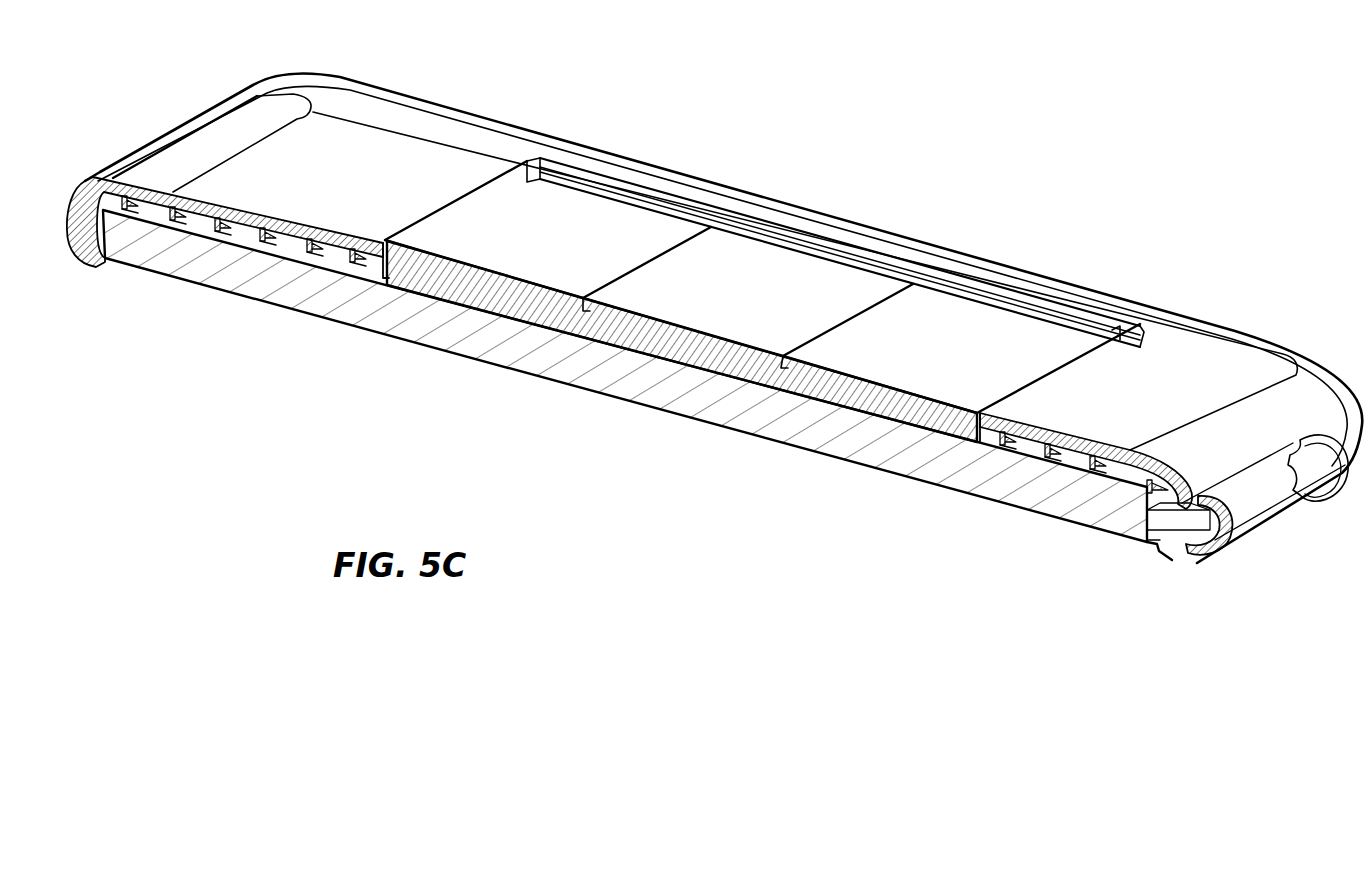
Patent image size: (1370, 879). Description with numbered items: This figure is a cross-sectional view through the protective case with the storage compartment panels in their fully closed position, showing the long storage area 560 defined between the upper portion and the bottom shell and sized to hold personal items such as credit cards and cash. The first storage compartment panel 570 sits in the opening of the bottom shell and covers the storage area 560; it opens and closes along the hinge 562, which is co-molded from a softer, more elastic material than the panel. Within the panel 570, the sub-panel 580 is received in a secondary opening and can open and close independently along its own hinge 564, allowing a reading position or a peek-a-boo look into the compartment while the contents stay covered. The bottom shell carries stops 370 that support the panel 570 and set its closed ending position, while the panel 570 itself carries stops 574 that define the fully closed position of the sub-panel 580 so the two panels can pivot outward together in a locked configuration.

The stop 370 is at (383, 252).
The storage area 560 is at (695, 357).
The hinge 562 is at (578, 183).
The hinge 564 is at (778, 232).
The first storage compartment panel 570 is at (630, 222).
The stop 574 is at (583, 302).
The sub-panel 580 is at (828, 280).